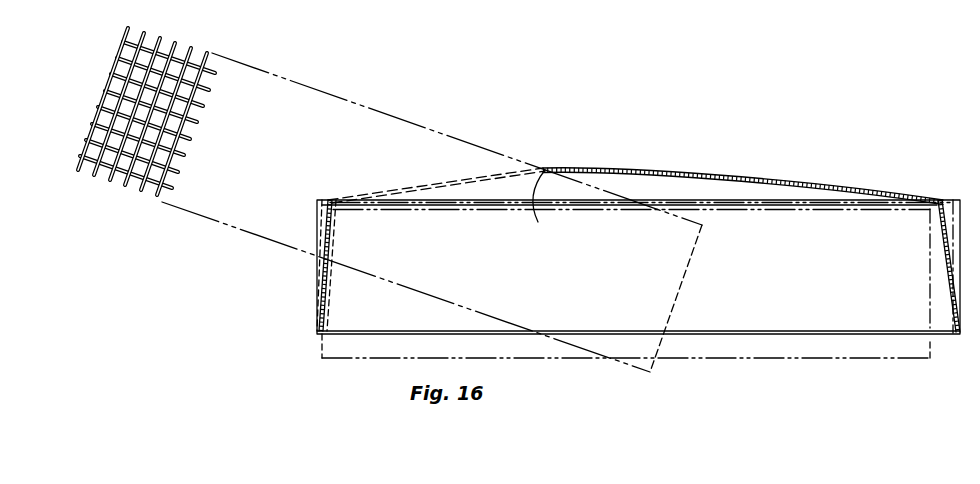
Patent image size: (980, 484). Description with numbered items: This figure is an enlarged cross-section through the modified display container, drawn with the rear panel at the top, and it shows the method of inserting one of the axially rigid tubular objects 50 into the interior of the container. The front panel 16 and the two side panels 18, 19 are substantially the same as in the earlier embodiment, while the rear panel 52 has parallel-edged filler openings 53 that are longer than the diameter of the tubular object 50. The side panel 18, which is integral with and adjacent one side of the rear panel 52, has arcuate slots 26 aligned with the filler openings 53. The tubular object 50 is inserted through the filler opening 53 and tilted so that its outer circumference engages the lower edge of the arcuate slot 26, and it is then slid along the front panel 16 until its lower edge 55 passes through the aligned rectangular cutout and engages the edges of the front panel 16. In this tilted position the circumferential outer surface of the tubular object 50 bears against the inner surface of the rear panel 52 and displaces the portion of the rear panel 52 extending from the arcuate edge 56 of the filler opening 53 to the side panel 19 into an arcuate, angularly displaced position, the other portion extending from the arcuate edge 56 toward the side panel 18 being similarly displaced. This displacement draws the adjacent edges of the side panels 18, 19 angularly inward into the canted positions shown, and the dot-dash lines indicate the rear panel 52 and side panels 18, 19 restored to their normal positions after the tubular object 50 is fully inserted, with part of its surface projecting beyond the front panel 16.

The front panel 16 is at (822, 336).
The side panel 18 is at (322, 280).
The side panel 19 is at (947, 232).
The arcuate slot 26 is at (335, 232).
The tubular object 50 is at (121, 192).
The rear panel 52 is at (675, 165).
The filler opening 53 is at (544, 166).
The lower edge 55 is at (688, 270).
The arcuate edge 56 is at (545, 207).